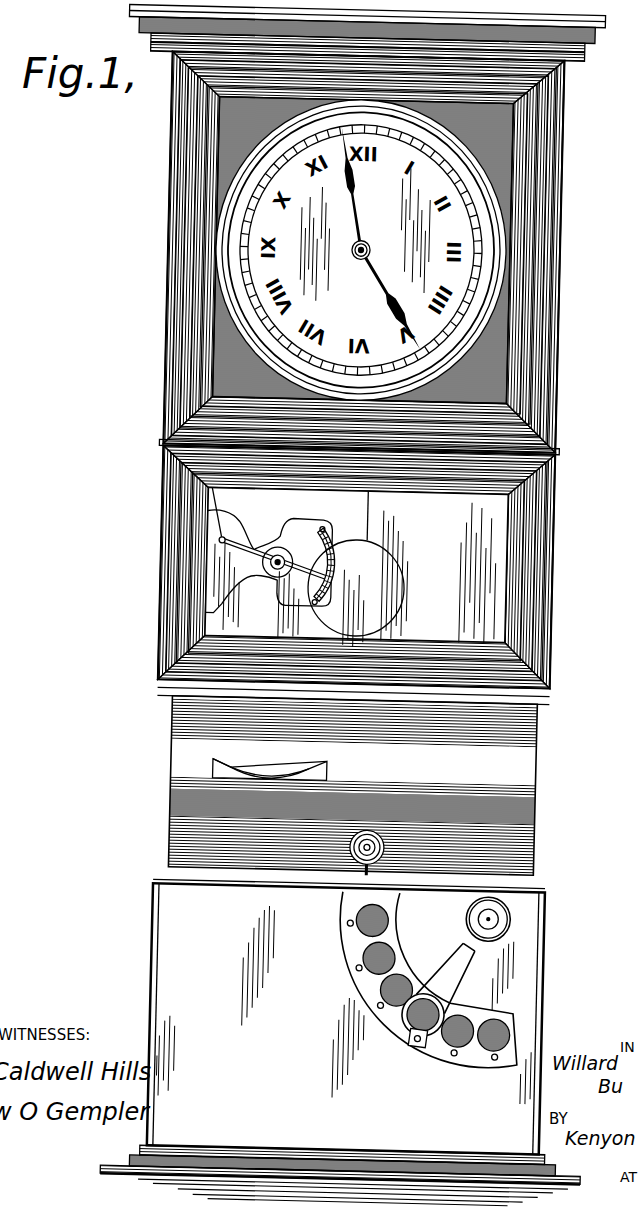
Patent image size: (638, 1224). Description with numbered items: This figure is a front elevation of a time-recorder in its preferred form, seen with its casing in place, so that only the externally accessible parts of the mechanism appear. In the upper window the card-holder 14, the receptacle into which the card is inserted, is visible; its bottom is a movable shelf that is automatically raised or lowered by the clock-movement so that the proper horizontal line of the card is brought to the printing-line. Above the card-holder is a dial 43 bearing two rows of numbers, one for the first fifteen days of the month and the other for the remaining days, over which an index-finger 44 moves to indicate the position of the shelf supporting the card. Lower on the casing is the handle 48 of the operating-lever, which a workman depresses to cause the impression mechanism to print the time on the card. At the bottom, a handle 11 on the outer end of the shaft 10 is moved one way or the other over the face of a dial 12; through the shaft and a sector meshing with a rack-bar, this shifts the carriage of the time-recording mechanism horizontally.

The shaft 10 is at (494, 915).
The handle 11 is at (474, 970).
The dial 12 is at (381, 976).
The card-holder 14 is at (333, 765).
The dial 43 is at (329, 528).
The index-finger 44 is at (262, 550).
The handle 48 is at (364, 846).